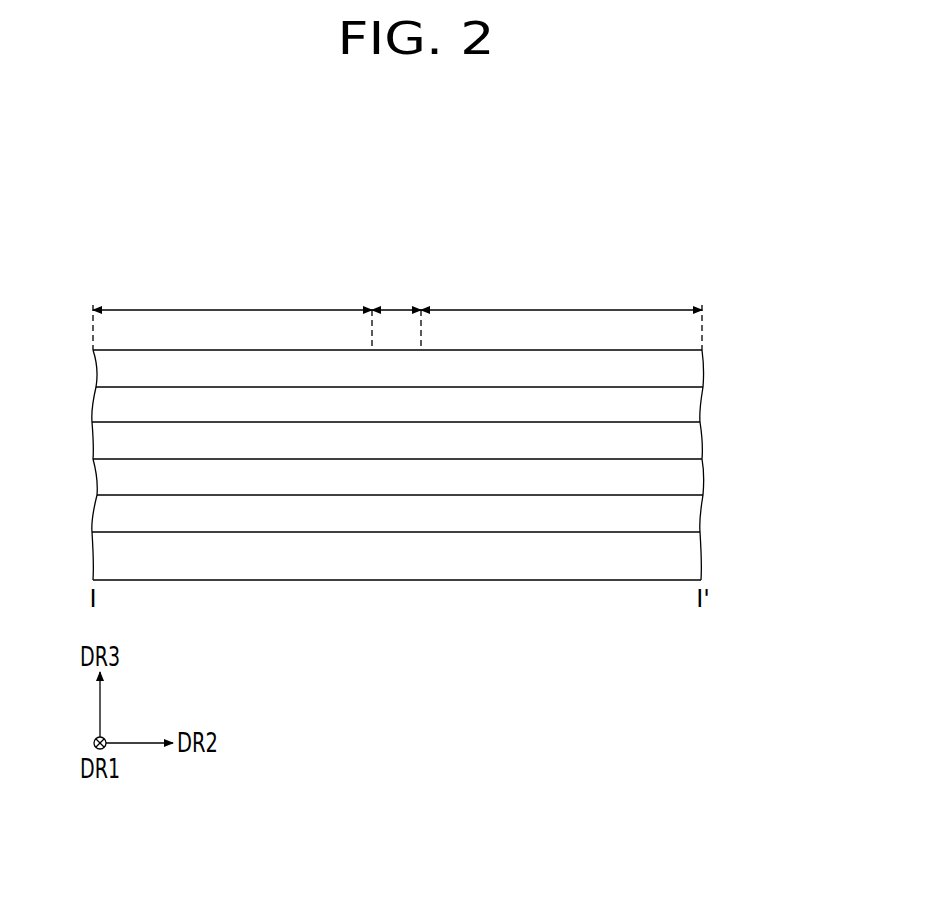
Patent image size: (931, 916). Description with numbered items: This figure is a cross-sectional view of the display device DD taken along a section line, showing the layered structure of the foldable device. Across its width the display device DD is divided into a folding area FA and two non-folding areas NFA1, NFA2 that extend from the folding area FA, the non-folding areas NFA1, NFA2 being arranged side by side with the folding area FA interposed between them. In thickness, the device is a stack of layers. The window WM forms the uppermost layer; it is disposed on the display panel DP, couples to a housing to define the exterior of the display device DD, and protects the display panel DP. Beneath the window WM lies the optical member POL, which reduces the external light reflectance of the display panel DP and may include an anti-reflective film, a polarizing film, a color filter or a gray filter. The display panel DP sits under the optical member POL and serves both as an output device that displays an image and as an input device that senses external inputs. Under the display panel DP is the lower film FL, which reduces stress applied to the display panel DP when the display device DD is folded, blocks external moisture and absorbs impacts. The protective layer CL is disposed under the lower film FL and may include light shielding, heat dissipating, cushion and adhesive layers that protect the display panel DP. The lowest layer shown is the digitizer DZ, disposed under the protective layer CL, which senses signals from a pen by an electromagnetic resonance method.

The display device DD is at (735, 268).
The window WM is at (692, 371).
The optical member POL is at (692, 408).
The display panel DP is at (688, 444).
The lower film FL is at (692, 483).
The protective layer CL is at (692, 518).
The digitizer DZ is at (688, 559).
The first non-folding area NFA1 is at (232, 293).
The folding area FA is at (396, 293).
The second non-folding area NFA2 is at (561, 293).